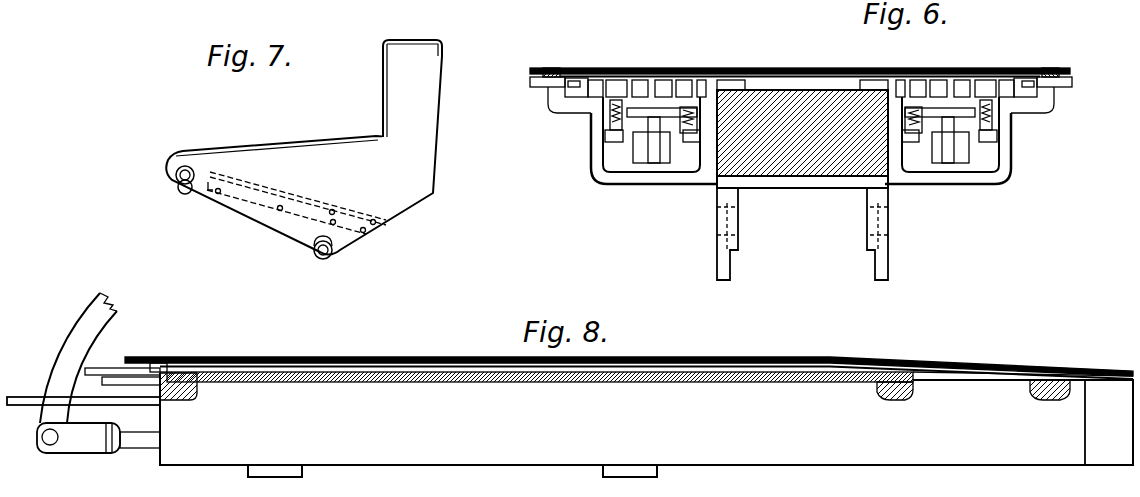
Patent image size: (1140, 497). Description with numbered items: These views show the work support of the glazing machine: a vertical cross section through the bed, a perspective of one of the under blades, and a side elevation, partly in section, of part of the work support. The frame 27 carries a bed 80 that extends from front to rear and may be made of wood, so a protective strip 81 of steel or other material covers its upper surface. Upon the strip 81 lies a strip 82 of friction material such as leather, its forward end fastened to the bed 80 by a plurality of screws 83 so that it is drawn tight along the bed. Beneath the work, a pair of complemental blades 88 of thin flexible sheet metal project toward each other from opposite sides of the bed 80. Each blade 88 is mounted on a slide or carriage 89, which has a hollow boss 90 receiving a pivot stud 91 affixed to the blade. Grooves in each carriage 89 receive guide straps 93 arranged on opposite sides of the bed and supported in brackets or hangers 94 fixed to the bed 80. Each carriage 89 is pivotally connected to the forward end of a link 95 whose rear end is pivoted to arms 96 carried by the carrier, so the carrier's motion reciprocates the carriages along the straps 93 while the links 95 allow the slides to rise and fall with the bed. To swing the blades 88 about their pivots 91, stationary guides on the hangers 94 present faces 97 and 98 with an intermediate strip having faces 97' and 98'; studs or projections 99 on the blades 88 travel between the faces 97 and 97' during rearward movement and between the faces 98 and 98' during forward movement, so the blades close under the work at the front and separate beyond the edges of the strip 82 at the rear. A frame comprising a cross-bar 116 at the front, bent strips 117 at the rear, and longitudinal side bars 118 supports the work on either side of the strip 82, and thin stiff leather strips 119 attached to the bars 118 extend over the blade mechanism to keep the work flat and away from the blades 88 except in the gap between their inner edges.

In FIG. 6, the frame 27 is at (888, 240).
In FIG. 6, the bed 80 is at (875, 180).
In FIG. 8, the bed 80 is at (646, 419).
In FIG. 8, the protective strip 81 is at (493, 383).
In FIG. 6, the strip of friction material 82 is at (758, 88).
In FIG. 8, the strip of friction material 82 is at (940, 374).
In FIG. 8, the screws 83 is at (1045, 380).
In FIG. 7, the blades 88 is at (304, 147).
In FIG. 6, the blades 88 is at (780, 74).
In FIG. 8, the blades 88 is at (818, 370).
In FIG. 6, the slide or carriage 89 is at (640, 128).
In FIG. 6, the hollow boss 90 is at (684, 80).
In FIG. 7, the pivot stud 91 is at (180, 195).
In FIG. 6, the pivot stud 91 is at (700, 80).
In FIG. 6, the guide straps 93 is at (612, 122).
In FIG. 8, the guide straps 93 is at (27, 397).
In FIG. 6, the brackets or hangers 94 is at (598, 170).
In FIG. 8, the brackets or hangers 94 is at (275, 468).
In FIG. 6, the link 95 is at (660, 160).
In FIG. 8, the link 95 is at (146, 440).
In FIG. 8, the arms 96 is at (100, 322).
In FIG. 6, the face 97 is at (819, 65).
In FIG. 6, the face 97' is at (796, 65).
In FIG. 6, the face 98 is at (802, 126).
In FIG. 6, the face 98' is at (801, 63).
In FIG. 7, the studs or projections 99 is at (332, 254).
In FIG. 8, the cross-bar 116 is at (1102, 422).
In FIG. 8, the bent strips 117 is at (158, 363).
In FIG. 6, the longitudinal side bars 118 is at (545, 90).
In FIG. 6, the longitudinal strips 119 is at (551, 67).